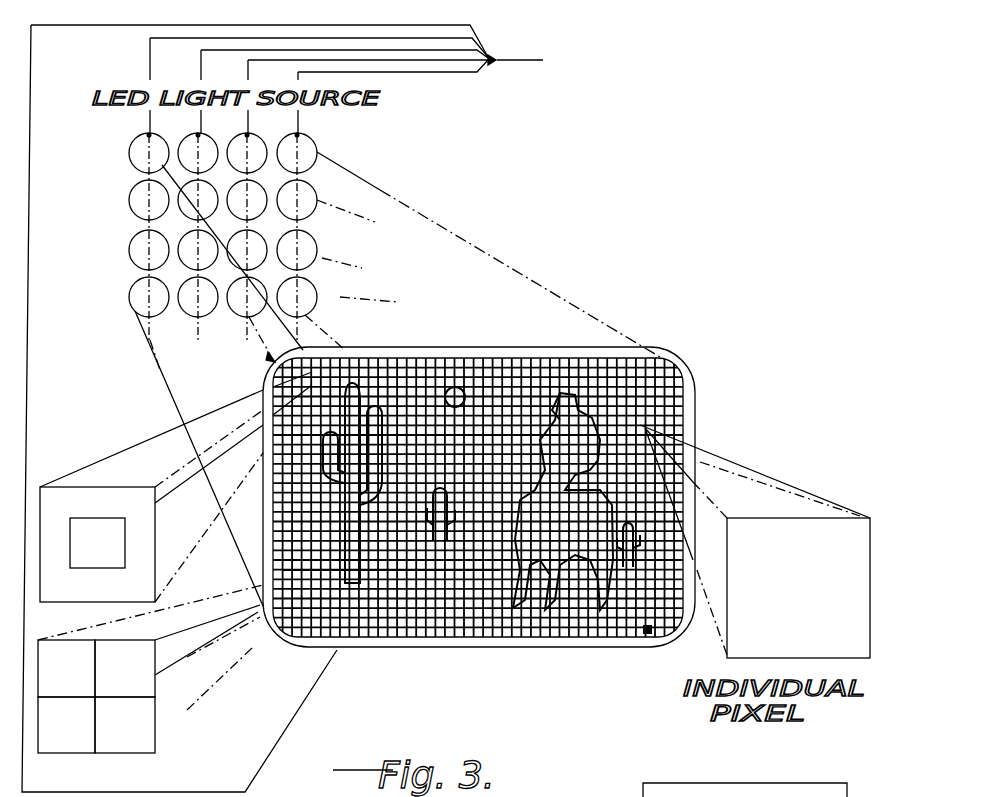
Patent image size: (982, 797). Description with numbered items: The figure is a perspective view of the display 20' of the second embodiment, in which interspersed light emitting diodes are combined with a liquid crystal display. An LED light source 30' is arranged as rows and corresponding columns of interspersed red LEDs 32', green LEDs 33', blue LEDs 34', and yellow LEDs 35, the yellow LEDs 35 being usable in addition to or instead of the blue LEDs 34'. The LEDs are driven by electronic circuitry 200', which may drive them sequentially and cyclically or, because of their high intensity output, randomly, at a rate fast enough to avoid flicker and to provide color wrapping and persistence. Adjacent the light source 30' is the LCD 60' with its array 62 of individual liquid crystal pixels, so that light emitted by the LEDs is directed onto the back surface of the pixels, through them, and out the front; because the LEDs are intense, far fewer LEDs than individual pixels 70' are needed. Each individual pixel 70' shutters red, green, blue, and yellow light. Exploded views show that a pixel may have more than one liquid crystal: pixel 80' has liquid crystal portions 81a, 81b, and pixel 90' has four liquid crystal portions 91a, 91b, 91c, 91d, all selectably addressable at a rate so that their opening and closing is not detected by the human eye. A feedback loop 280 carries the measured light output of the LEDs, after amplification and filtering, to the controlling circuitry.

The electronic circuitry 200' is at (489, 42).
The LED light source 30' is at (310, 215).
The red LED 32' is at (227, 162).
The green LED 33' is at (235, 253).
The blue LED 34' is at (228, 248).
The yellow LED 35 is at (317, 200).
The display 20' is at (479, 410).
The array of individual pixels 62 is at (412, 673).
The LCD 60' is at (644, 652).
The individual liquid crystal pixel 70' is at (755, 541).
The pixel 80' is at (176, 487).
The liquid crystal 81a is at (97, 543).
The liquid crystal 81b is at (91, 586).
The pixel 90' is at (150, 686).
The liquid crystal 91a is at (66, 668).
The liquid crystal 91b is at (66, 725).
The liquid crystal 91c is at (125, 668).
The liquid crystal 91d is at (125, 725).
The feedback loop 280 is at (768, 782).